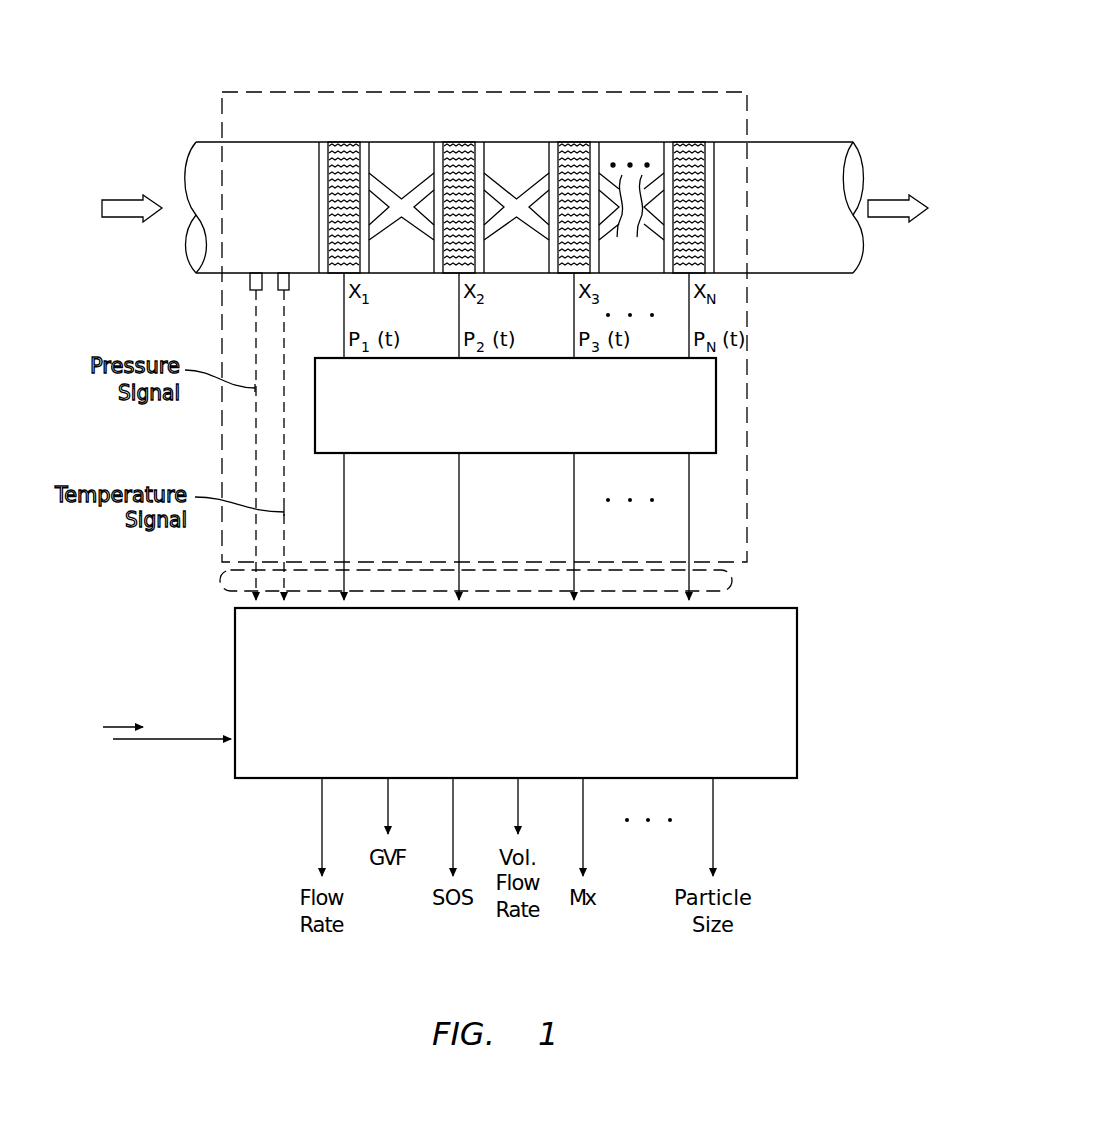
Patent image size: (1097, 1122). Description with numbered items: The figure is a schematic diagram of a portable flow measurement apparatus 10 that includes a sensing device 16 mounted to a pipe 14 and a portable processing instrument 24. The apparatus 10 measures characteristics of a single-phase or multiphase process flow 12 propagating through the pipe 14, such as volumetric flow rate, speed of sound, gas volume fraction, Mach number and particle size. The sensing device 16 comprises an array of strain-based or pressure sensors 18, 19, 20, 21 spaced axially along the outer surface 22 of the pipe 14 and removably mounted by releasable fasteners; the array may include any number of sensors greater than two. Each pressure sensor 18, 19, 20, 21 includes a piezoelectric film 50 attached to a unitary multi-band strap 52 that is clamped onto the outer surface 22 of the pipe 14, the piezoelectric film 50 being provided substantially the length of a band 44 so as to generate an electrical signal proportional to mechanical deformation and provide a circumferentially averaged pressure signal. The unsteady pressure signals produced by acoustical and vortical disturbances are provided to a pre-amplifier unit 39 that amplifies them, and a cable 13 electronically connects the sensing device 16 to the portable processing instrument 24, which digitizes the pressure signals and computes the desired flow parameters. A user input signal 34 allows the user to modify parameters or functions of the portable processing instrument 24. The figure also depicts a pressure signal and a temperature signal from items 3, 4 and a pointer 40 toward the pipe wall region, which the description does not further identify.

The portable flow measurement apparatus 10 is at (822, 446).
The process flow 12 is at (125, 199).
The cable 13 is at (728, 589).
The pipe 14 is at (820, 139).
The sensing device 16 is at (677, 90).
The pressure sensor 18 is at (348, 138).
The pressure sensor 19 is at (463, 138).
The pressure sensor 20 is at (578, 138).
The pressure sensor 21 is at (691, 138).
The outer surface of pipe 22 is at (800, 275).
The portable processing instrument 24 is at (797, 670).
The pressure sensor 3 is at (250, 283).
The temperature sensor 4 is at (290, 284).
The user input signal 34 is at (113, 727).
The pre-amplifier unit 39 is at (716, 415).
The pipe wall 40 is at (310, 249).
The band 44 is at (373, 257).
The piezoelectric film 50 is at (327, 148).
The unitary multi-band strap 52 is at (319, 211).